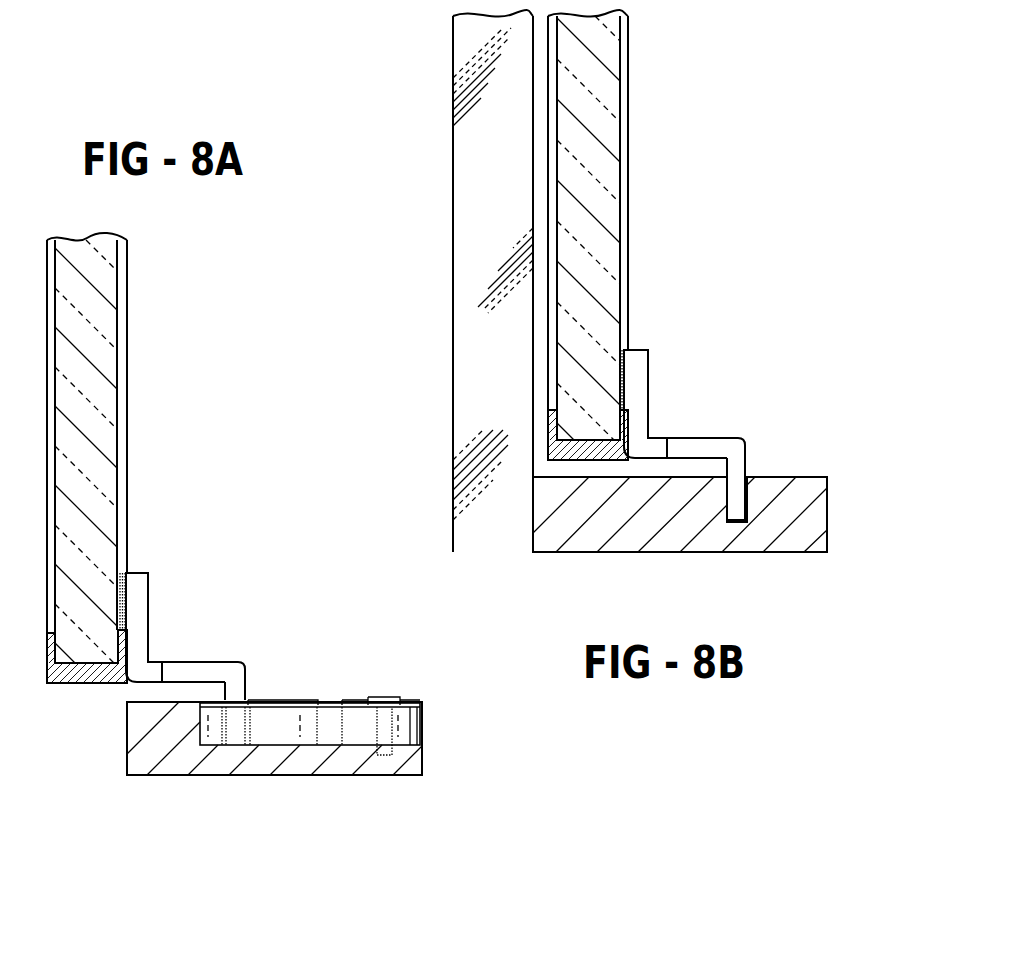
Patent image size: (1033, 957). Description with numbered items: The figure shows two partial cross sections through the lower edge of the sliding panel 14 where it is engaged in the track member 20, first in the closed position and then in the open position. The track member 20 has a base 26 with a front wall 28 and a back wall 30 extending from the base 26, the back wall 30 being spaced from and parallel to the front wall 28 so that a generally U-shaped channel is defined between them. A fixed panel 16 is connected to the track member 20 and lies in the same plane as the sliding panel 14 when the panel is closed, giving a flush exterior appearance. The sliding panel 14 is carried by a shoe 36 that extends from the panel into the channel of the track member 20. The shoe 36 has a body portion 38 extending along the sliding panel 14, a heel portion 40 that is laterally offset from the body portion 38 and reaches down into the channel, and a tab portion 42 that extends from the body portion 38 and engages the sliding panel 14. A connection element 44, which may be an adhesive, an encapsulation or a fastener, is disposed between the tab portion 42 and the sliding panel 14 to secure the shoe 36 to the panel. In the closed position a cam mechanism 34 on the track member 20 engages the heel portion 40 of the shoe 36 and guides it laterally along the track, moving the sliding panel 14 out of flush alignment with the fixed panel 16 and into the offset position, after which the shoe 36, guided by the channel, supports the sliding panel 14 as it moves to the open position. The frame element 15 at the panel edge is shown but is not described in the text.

In FIG. 8A, the sliding panel 14 is at (107, 402).
In FIG. 8B, the sliding panel 14 is at (612, 178).
In FIG. 8A, the panel frame 15 is at (90, 683).
In FIG. 8B, the panel frame 15 is at (587, 463).
In FIG. 8B, the fixed panel 16 is at (470, 252).
In FIG. 8A, the track member 20 is at (407, 777).
In FIG. 8B, the track member 20 is at (807, 554).
In FIG. 8B, the base 26 is at (713, 543).
In FIG. 8B, the front wall 28 is at (802, 492).
In FIG. 8B, the back wall 30 is at (585, 500).
In FIG. 8A, the cam mechanism 34 is at (355, 720).
In FIG. 8A, the shoe 36 is at (156, 612).
In FIG. 8B, the shoe 36 is at (659, 388).
In FIG. 8A, the body portion 38 is at (155, 668).
In FIG. 8B, the body portion 38 is at (658, 445).
In FIG. 8A, the heel portion 40 is at (236, 697).
In FIG. 8B, the heel portion 40 is at (738, 472).
In FIG. 8A, the tab portion 42 is at (135, 592).
In FIG. 8B, the tab portion 42 is at (640, 368).
In FIG. 8A, the connection element 44 is at (122, 573).
In FIG. 8B, the connection element 44 is at (627, 350).